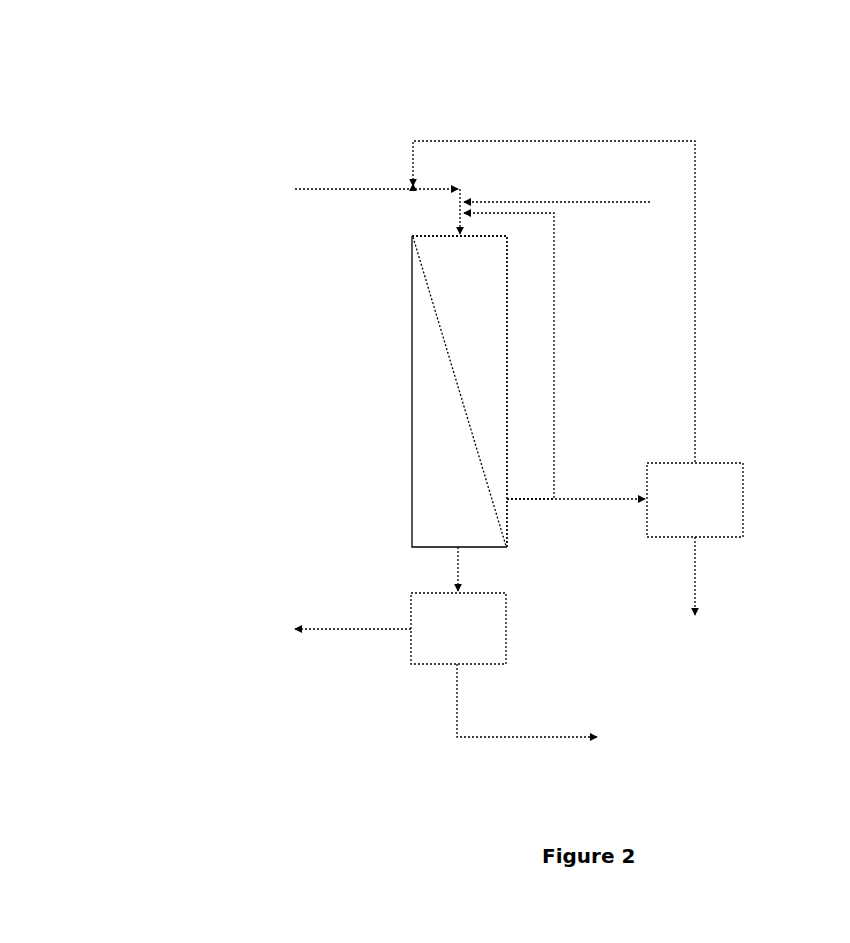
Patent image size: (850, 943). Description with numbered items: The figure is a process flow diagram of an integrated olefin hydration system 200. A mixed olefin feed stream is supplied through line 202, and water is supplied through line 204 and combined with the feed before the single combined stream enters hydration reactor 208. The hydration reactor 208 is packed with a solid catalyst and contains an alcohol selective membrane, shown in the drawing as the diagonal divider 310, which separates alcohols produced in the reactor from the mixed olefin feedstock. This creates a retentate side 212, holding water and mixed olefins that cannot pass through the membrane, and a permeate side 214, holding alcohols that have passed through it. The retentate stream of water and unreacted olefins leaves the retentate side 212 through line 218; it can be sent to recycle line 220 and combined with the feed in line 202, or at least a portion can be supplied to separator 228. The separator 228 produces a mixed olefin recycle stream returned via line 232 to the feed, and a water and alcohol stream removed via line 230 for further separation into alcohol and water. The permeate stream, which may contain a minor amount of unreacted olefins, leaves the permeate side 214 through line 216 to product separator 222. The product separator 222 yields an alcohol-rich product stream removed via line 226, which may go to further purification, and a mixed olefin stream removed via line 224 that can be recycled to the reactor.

The system for producing hydrocarbon products 200 is at (449, 380).
The mixed olefin feed line 202 is at (342, 192).
The water supply line 204 is at (602, 204).
The hydration reactor 208 is at (410, 357).
The divider 310 is at (423, 275).
The retentate side 212 is at (466, 302).
The permeate side 214 is at (430, 468).
The permeate line 216 is at (460, 552).
The retentate line 218 is at (530, 503).
The recycle line 220 is at (556, 262).
The product separator 222 is at (506, 618).
The mixed olefin stream line 224 is at (375, 632).
The alcohol-rich product stream line 226 is at (490, 737).
The separator 228 is at (743, 500).
The water and alcohol stream line 230 is at (697, 555).
The mixed olefin recycle line 232 is at (697, 262).